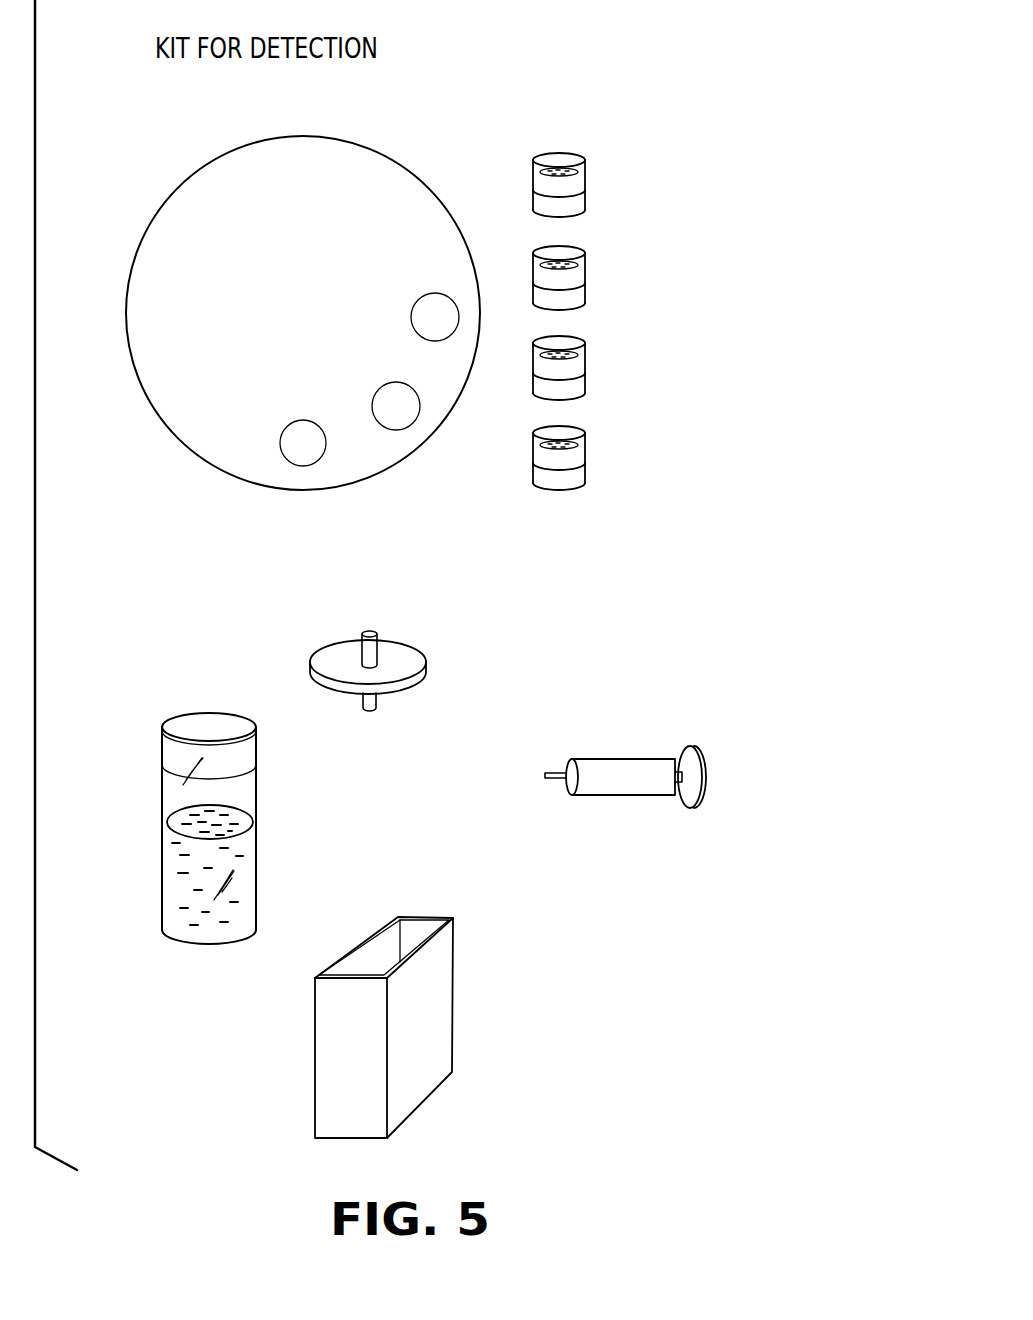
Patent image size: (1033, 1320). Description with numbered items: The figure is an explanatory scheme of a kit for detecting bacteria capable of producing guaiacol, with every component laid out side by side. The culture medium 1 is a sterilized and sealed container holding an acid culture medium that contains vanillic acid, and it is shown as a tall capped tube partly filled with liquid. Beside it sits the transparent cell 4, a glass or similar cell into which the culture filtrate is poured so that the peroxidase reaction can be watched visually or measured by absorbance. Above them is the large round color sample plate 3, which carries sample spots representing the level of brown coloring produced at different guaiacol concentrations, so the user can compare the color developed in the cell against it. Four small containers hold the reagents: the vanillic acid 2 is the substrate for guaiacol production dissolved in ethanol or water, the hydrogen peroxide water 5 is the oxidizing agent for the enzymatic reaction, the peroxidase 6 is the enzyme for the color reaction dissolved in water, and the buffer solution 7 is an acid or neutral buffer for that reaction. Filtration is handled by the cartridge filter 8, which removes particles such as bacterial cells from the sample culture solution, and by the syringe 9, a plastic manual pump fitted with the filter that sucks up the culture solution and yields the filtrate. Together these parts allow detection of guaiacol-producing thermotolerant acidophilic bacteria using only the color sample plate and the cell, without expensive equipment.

The vanillic acid-containing culture medium 1 is at (240, 888).
The vanillic acid substrate 2 is at (574, 202).
The color sample plate 3 is at (297, 450).
The transparent cell 4 is at (435, 983).
The hydrogen peroxide water 5 is at (574, 295).
The peroxidase enzyme 6 is at (574, 385).
The buffer solution 7 is at (574, 475).
The cartridge filter 8 is at (400, 660).
The syringe 9 is at (690, 762).